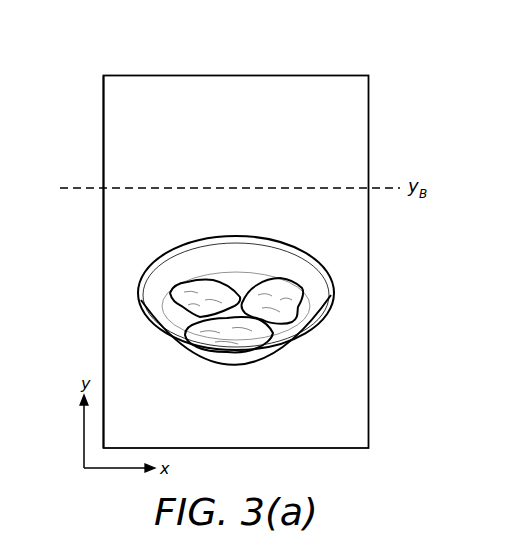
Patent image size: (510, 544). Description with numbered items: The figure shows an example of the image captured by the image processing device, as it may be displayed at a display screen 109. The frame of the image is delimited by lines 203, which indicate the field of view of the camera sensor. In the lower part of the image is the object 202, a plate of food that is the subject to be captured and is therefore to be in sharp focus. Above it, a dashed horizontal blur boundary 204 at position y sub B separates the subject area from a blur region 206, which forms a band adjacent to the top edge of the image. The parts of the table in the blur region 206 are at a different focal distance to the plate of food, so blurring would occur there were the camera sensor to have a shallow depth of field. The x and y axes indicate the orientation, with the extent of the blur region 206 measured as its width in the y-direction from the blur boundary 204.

The lines 203 is at (233, 75).
The display screen 109 is at (103, 278).
The blur region 206 is at (351, 106).
The blur boundary 204 is at (77, 185).
The object 202 is at (318, 300).